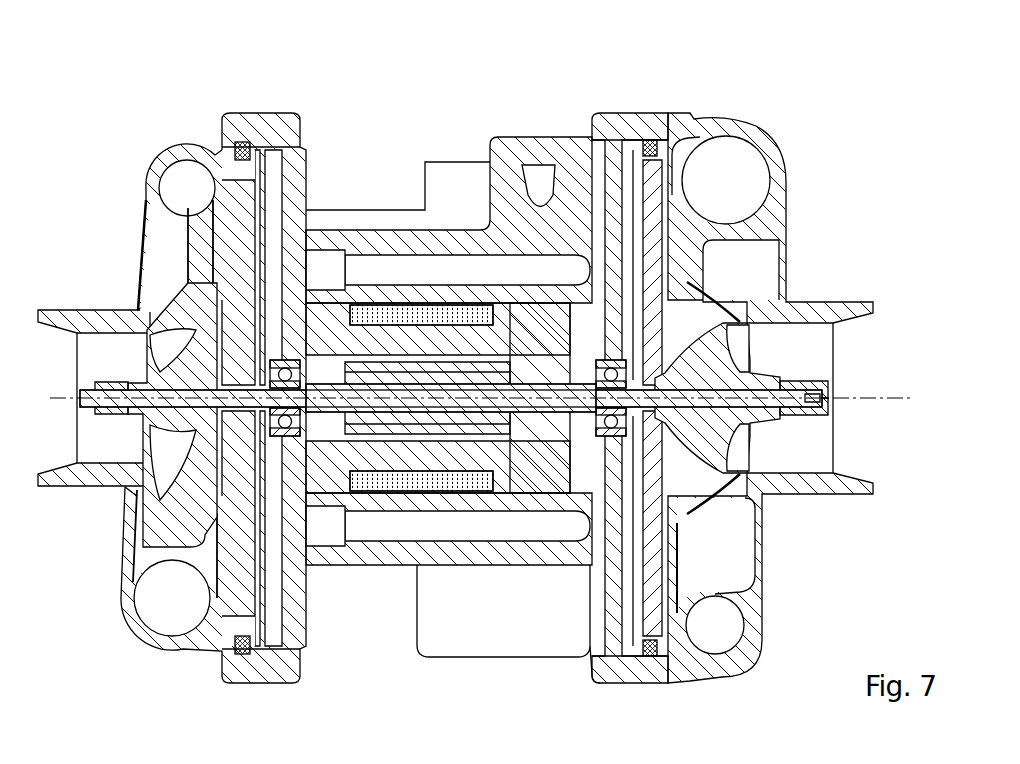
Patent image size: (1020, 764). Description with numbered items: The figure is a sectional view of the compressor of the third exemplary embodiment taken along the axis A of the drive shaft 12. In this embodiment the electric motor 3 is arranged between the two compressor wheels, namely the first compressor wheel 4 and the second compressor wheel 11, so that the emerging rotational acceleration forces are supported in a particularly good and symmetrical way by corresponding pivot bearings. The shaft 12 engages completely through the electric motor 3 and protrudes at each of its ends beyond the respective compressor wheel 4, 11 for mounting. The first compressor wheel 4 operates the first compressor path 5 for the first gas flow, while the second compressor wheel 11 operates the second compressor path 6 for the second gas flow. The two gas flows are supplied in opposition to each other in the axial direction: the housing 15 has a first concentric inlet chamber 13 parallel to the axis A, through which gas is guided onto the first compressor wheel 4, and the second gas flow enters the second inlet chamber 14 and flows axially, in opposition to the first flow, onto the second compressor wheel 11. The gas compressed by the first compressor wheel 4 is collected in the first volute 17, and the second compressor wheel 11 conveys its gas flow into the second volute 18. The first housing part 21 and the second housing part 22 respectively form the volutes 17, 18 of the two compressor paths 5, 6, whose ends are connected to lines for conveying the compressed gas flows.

The electric motor 3 is at (400, 200).
The first compressor wheel 4 is at (700, 482).
The first compressor path 5 is at (770, 398).
The second compressor path 6 is at (172, 398).
The second compressor wheel 11 is at (175, 320).
The drive shaft 12 is at (812, 388).
The first inlet chamber 13 is at (845, 430).
The second inlet chamber 14 is at (132, 450).
The housing 15 is at (664, 100).
The first volute 17 is at (742, 152).
The second volute 18 is at (188, 172).
The first housing part 21 is at (626, 118).
The second housing part 22 is at (240, 125).
The axis A is at (904, 396).